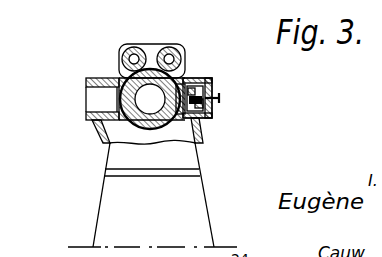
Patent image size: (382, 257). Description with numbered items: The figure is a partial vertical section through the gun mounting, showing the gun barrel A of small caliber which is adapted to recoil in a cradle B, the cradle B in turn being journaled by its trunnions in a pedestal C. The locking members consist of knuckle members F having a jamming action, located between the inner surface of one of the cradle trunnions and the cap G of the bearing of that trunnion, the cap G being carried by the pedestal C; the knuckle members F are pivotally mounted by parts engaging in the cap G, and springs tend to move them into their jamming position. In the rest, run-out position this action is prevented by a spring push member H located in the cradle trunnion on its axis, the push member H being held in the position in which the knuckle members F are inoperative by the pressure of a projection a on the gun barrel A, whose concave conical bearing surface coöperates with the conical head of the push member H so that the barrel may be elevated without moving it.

The gun barrel A is at (107, 99).
The cradle B is at (173, 123).
The pedestal C is at (118, 159).
The projection a is at (184, 83).
The knuckle members F is at (206, 80).
The cap G is at (213, 113).
The spring push member H is at (213, 85).